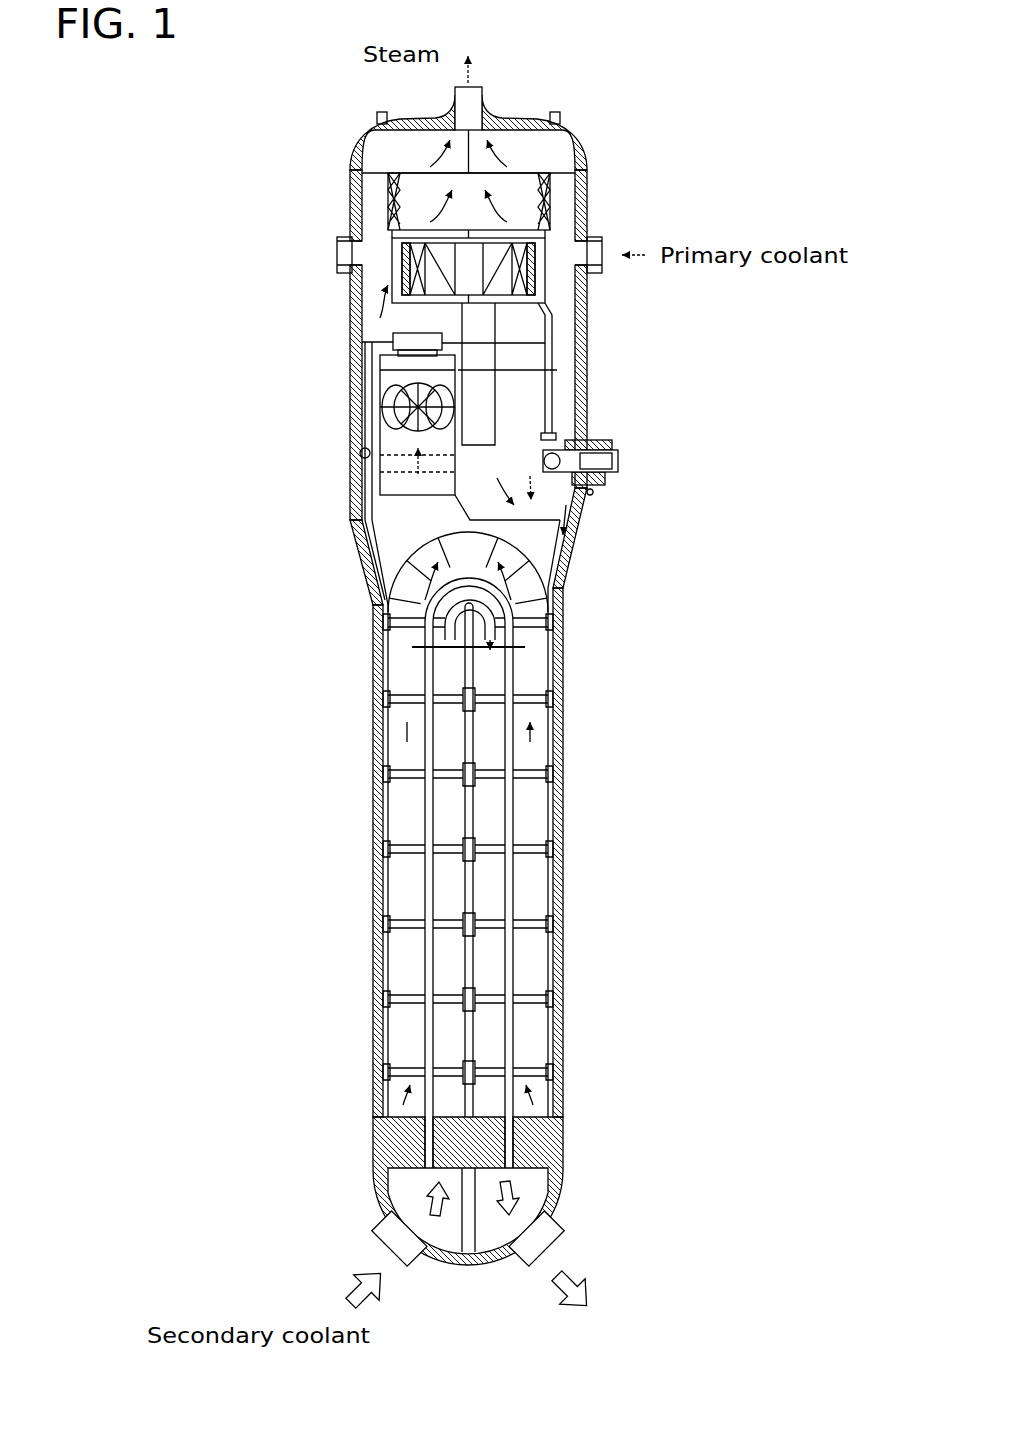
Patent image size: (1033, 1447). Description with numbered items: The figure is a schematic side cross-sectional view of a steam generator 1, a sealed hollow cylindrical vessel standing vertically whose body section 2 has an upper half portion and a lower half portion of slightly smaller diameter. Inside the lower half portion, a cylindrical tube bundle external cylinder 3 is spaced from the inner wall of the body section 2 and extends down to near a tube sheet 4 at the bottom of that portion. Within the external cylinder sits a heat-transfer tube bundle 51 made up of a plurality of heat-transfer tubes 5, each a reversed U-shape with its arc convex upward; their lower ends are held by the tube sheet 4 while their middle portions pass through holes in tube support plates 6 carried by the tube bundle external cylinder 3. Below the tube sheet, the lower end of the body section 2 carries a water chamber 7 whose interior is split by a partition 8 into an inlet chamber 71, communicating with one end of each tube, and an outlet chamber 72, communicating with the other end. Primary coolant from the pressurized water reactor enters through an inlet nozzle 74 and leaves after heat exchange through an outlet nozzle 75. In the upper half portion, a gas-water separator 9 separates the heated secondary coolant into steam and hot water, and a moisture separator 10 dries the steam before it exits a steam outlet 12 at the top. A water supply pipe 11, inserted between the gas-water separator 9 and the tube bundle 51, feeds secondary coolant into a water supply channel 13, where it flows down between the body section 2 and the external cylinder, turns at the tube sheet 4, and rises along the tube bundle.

The steam generator 1 is at (491, 704).
The body section 2 is at (350, 312).
The tube bundle external cylinder 3 is at (365, 552).
The tube sheet 4 is at (565, 1143).
The heat-transfer tube 5 is at (451, 850).
The tube support plate 6 is at (530, 694).
The water chamber 7 is at (460, 1232).
The partition 8 is at (474, 1268).
The gas-water separator 9 is at (383, 394).
The moisture separator 10 is at (522, 195).
The water supply pipe 11 is at (585, 440).
The steam outlet 12 is at (472, 107).
The water supply channel 13 is at (372, 943).
The heat-transfer tube bundle 51 is at (528, 592).
The inlet chamber 71 is at (374, 1188).
The outlet chamber 72 is at (563, 1188).
The inlet nozzle 74 is at (413, 1275).
The outlet nozzle 75 is at (530, 1270).